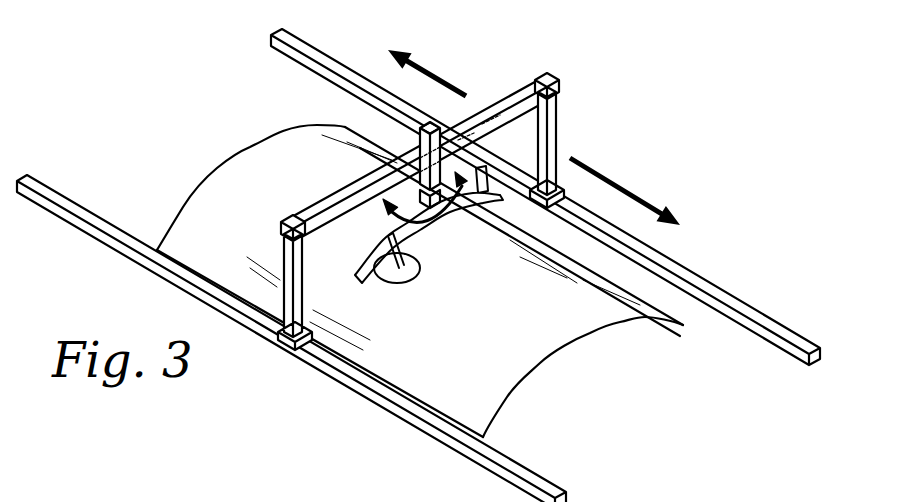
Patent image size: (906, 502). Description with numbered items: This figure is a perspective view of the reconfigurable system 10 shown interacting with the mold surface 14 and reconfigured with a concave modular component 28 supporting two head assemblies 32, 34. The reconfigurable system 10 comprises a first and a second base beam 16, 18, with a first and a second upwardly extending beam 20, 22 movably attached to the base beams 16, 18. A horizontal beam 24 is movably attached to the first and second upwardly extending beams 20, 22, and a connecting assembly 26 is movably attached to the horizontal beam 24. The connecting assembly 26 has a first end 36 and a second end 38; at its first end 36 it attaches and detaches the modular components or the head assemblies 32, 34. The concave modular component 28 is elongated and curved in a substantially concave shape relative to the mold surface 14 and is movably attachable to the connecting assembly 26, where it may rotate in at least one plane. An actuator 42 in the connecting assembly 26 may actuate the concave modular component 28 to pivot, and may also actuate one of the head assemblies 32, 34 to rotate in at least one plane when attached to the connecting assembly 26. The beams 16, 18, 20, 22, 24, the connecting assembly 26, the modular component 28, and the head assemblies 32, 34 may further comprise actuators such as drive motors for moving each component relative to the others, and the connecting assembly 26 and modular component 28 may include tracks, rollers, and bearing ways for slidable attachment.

The reconfigurable system 10 is at (696, 68).
The mold surface 14 is at (530, 321).
The first base beam 16 is at (540, 480).
The second base beam 18 is at (778, 332).
The first upwardly extending beam 20 is at (263, 259).
The second upwardly extending beam 22 is at (552, 128).
The horizontal beam 24 is at (501, 100).
The connecting assembly 26 is at (420, 143).
The concave modular component 28 is at (420, 223).
The head assembly 32 is at (396, 283).
The head assembly 34 is at (484, 215).
The first end 36 is at (413, 190).
The second end 38 is at (427, 112).
The actuator 42 is at (491, 162).